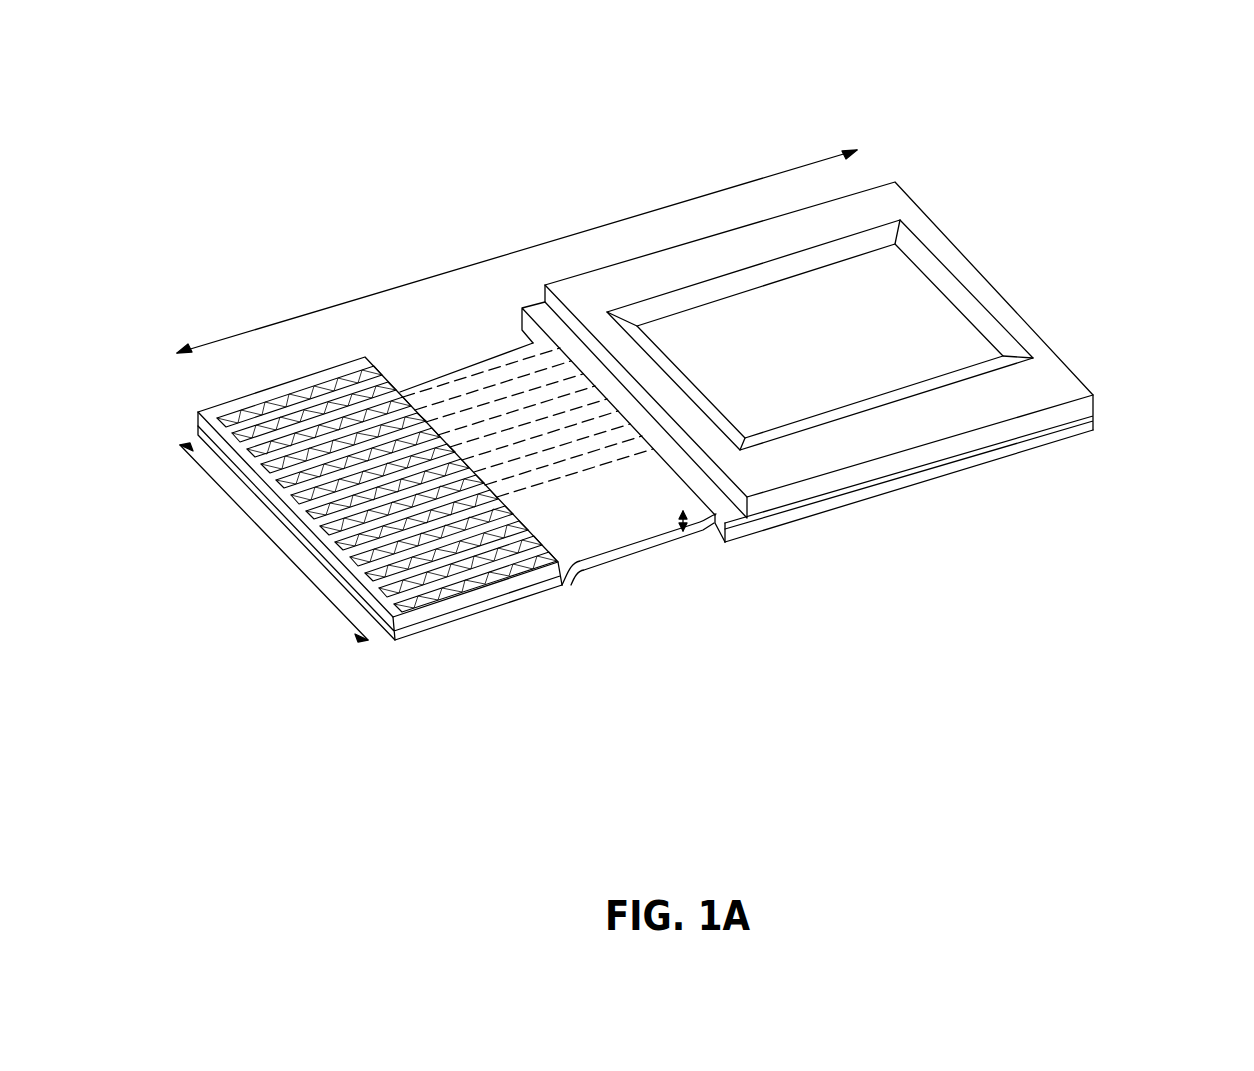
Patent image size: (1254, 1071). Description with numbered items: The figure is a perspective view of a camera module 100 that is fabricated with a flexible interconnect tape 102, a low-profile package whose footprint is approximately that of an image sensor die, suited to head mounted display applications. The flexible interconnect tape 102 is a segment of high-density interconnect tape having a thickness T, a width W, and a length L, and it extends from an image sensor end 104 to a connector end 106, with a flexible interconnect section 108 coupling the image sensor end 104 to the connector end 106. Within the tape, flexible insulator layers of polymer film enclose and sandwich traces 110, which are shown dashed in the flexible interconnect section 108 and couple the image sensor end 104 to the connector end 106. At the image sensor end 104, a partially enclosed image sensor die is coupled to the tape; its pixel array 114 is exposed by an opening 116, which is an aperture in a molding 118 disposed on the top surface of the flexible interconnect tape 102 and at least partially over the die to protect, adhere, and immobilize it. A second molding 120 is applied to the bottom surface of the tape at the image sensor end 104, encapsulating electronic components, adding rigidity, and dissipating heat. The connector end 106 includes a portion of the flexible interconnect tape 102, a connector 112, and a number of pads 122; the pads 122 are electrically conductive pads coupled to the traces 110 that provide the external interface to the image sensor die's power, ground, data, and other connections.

The camera module 100 is at (1003, 50).
The flexible interconnect tape 102 is at (621, 511).
The image sensor end 104 is at (745, 566).
The connector end 106 is at (420, 682).
The flexible interconnect section 108 is at (577, 618).
The traces 110 is at (468, 383).
The connector 112 is at (280, 390).
The pixel array 114 is at (829, 341).
The opening 116 is at (930, 322).
The molding 118 is at (1077, 383).
The molding 120 is at (1085, 428).
The pads 122 is at (230, 404).